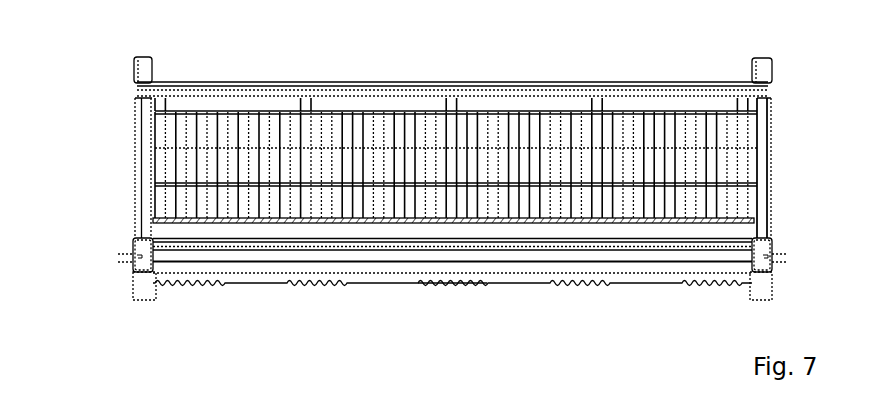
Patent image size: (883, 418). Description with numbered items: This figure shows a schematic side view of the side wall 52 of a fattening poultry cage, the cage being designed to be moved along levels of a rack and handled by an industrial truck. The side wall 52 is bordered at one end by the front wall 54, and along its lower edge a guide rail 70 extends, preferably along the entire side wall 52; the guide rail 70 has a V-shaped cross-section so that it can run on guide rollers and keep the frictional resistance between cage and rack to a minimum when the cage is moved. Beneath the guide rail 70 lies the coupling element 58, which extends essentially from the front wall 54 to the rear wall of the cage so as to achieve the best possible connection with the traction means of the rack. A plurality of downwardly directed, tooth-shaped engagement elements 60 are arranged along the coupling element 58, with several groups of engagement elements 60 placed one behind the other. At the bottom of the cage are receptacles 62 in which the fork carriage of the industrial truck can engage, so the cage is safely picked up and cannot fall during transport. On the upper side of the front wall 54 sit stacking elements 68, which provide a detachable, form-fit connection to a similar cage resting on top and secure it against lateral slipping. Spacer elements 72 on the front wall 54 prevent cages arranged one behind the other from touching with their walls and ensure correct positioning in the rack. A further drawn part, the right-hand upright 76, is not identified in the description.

The side wall 52 is at (523, 140).
The front wall 54 is at (118, 181).
The coupling element 58 is at (372, 292).
The engagement element 60 is at (457, 288).
The receptacle 62 is at (133, 300).
The stacking elements 68 is at (776, 72).
The guide rail 70 is at (636, 264).
The spacer element 72 is at (785, 257).
The right frame post 76 is at (757, 178).